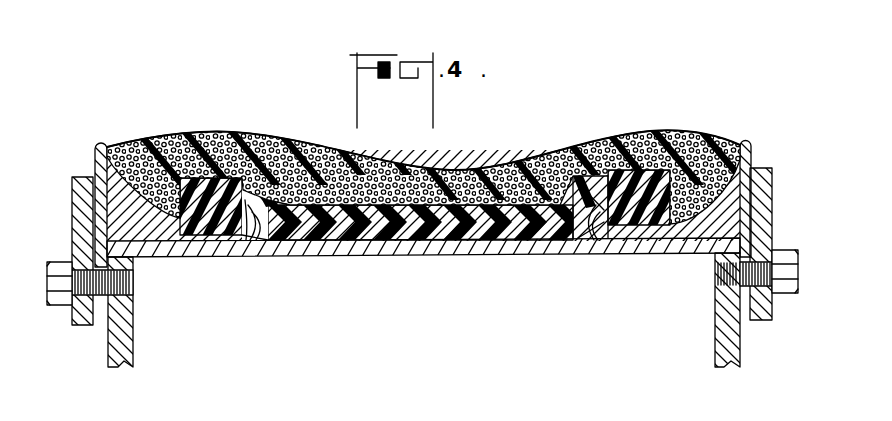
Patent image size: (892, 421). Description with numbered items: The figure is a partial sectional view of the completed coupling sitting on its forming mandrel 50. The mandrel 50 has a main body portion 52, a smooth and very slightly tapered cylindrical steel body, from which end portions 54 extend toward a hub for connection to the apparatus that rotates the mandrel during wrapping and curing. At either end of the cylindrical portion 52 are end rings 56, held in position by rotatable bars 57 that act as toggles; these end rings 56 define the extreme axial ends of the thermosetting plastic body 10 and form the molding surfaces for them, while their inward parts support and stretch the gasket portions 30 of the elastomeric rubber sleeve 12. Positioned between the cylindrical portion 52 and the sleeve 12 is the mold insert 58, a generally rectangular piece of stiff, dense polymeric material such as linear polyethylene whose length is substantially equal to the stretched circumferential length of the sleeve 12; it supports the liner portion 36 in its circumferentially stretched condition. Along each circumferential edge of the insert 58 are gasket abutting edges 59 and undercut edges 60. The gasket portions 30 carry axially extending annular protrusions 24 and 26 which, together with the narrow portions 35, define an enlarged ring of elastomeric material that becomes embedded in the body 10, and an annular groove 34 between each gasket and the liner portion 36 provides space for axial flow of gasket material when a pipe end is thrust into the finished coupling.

The body 10 is at (425, 186).
The rubber sleeve 12 is at (540, 157).
The annular protrusion 24 is at (425, 164).
The annular protrusion 26 is at (282, 168).
The gasket portion 30 is at (205, 240).
The annular groove 34 is at (263, 226).
The narrow portion 35 is at (258, 223).
The liner portion 36 is at (420, 170).
The mandrel 50 is at (428, 230).
The main body portion 52 is at (315, 243).
The end portion 54 is at (137, 333).
The end ring 56 is at (98, 160).
The rotatable bar 57 is at (78, 187).
The mold insert 58 is at (516, 232).
The gasket abutting edge 59 is at (250, 238).
The undercut edge 60 is at (240, 240).